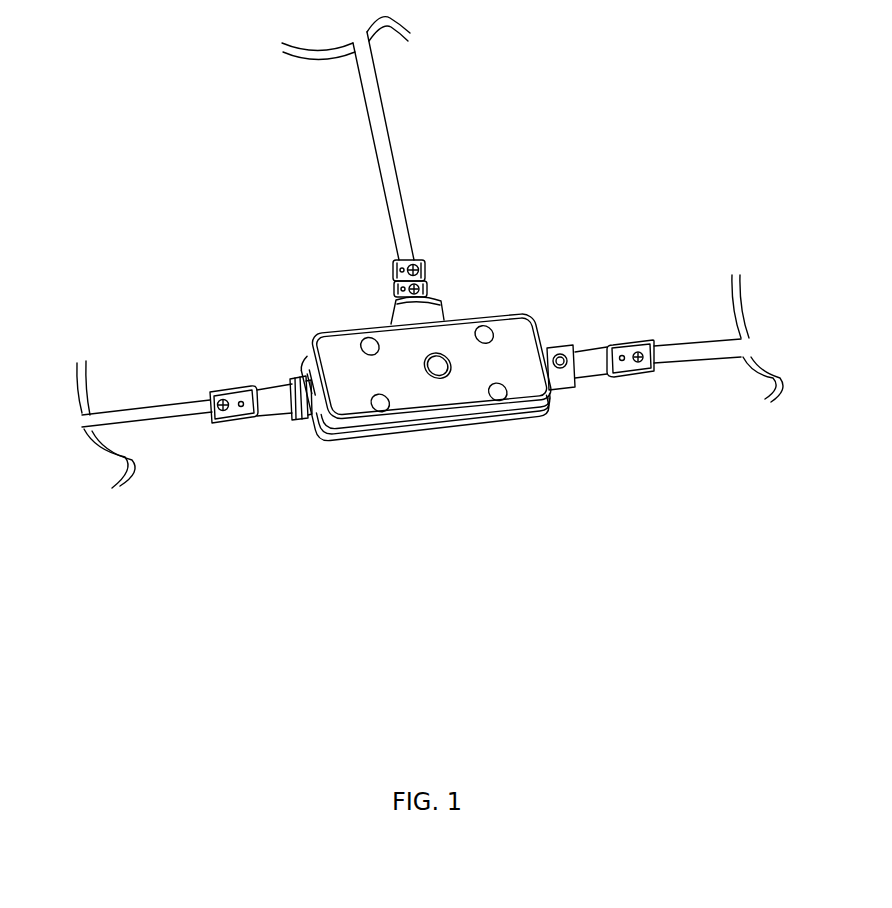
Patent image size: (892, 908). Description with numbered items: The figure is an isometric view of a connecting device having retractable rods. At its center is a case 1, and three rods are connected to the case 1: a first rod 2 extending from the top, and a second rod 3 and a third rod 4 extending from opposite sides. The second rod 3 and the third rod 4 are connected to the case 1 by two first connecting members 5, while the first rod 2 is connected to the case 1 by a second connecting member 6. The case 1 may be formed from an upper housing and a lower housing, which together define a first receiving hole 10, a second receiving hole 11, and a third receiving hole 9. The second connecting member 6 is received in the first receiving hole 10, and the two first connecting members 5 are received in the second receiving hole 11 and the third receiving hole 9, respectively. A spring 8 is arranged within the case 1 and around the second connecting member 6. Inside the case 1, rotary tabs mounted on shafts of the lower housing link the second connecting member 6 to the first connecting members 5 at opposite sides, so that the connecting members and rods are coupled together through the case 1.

The case 1 is at (440, 438).
The first rod 2 is at (380, 149).
The second rod 3 is at (703, 352).
The third rod 4 is at (145, 413).
The first connecting member 5 is at (280, 392).
The second connecting member 6 is at (430, 307).
The spring 8 is at (424, 268).
The third receiving hole 9 is at (575, 386).
The first receiving hole 10 is at (390, 303).
The second receiving hole 11 is at (295, 418).